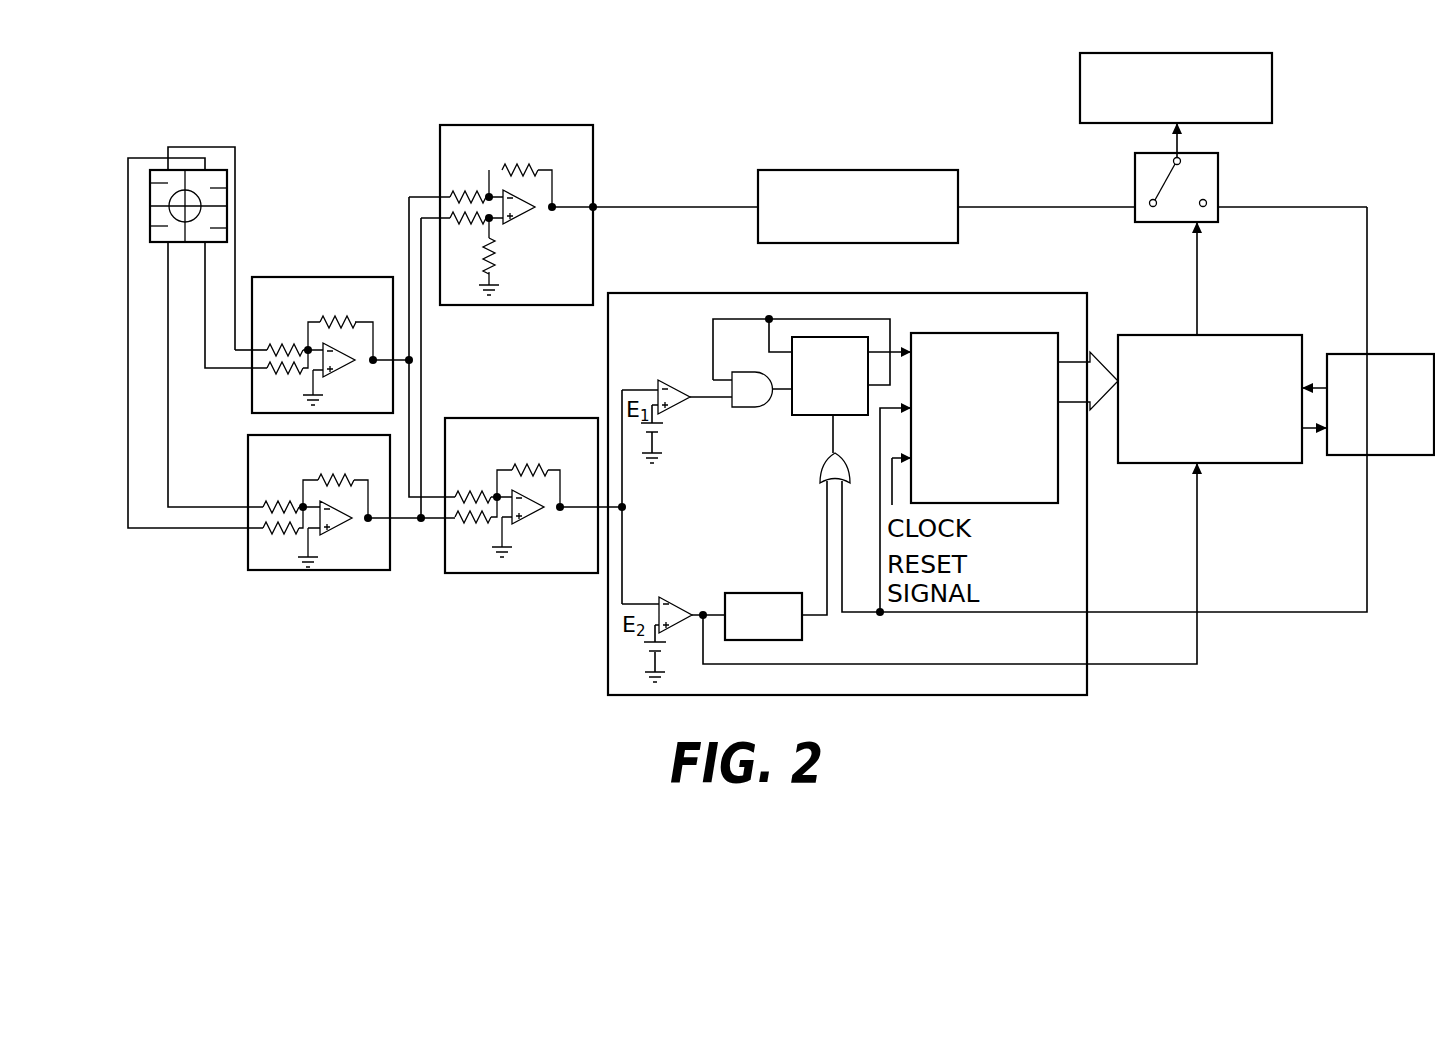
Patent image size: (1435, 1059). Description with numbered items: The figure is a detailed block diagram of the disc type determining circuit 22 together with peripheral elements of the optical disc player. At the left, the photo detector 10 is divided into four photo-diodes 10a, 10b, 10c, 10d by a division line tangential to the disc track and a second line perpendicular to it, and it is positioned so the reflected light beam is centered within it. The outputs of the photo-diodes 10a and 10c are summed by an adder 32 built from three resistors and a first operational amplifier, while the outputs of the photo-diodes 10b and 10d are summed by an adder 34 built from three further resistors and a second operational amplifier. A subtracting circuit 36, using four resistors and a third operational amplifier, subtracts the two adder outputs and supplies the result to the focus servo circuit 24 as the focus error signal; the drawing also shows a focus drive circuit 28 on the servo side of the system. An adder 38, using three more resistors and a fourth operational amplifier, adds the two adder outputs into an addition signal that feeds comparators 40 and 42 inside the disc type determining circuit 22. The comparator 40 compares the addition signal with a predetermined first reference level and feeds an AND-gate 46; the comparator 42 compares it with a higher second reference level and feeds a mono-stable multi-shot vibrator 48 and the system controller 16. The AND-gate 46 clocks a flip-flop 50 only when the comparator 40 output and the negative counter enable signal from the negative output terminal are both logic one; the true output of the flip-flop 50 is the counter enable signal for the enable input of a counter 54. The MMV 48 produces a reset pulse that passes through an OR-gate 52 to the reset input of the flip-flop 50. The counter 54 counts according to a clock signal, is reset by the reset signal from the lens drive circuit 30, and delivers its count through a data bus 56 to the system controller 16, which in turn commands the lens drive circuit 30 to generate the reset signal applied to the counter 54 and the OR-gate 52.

The photo detector 10 is at (213, 160).
The photo-diode 10a is at (165, 183).
The photo-diode 10b is at (165, 226).
The photo-diode 10c is at (215, 229).
The photo-diode 10d is at (215, 188).
The system controller 16 is at (1258, 335).
The disc type determining circuit 22 is at (648, 293).
The focus servo circuit 24 is at (855, 170).
The focus drive circuit 28 is at (1080, 92).
The lens drive circuit 30 is at (1400, 354).
The adder 32 is at (323, 277).
The adder 34 is at (318, 570).
The subtracting circuit 36 is at (520, 125).
The adder 38 is at (530, 573).
The comparator 40 is at (680, 386).
The comparator 42 is at (683, 598).
The AND-gate 46 is at (740, 407).
The mono-stable multi-shot vibrator 48 is at (765, 593).
The flip-flop 50 is at (800, 415).
The OR-gate 52 is at (823, 485).
The counter 54 is at (978, 333).
The data bus 56 is at (1070, 404).